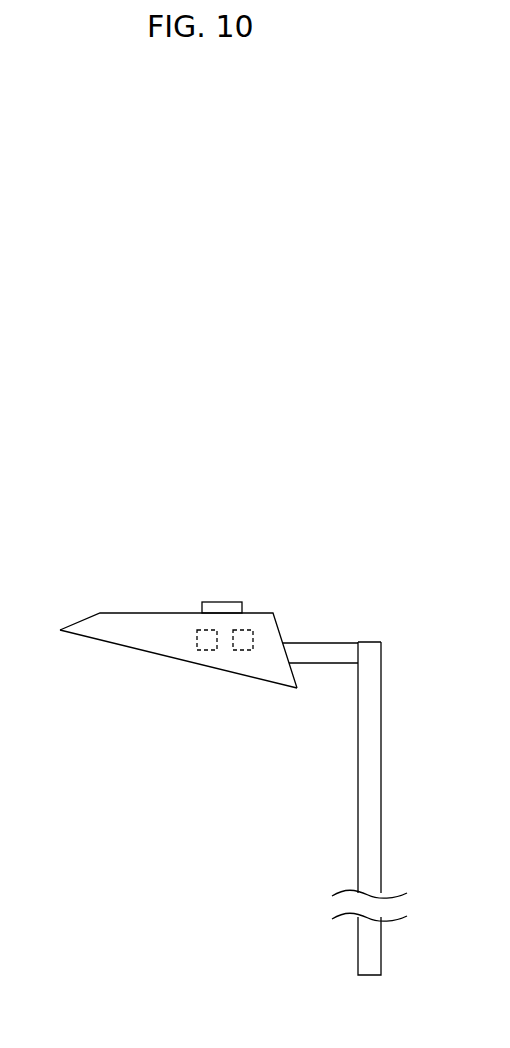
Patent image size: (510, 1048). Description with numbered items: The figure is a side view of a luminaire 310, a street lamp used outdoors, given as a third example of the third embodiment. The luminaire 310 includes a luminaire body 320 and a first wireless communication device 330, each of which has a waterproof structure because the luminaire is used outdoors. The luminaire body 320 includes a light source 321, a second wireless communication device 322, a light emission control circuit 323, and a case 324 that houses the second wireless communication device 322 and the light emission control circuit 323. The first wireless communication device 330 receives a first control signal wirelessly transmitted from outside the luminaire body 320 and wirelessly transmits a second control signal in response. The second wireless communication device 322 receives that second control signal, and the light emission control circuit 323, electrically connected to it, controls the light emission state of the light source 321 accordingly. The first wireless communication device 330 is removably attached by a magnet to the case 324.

The luminaire 310 is at (329, 545).
The luminaire body 320 is at (317, 623).
The light source 321 is at (127, 652).
The second wireless communication device 322 is at (243, 650).
The light emission control circuit 323 is at (196, 648).
The case 324 is at (125, 627).
The first wireless communication device 330 is at (217, 607).